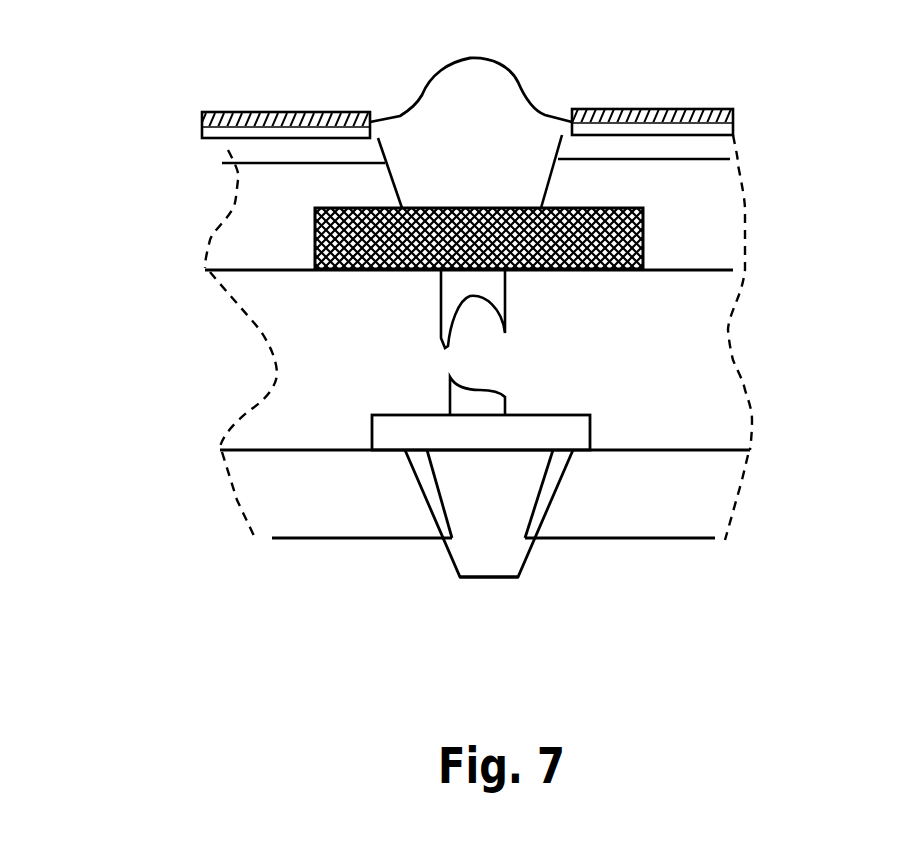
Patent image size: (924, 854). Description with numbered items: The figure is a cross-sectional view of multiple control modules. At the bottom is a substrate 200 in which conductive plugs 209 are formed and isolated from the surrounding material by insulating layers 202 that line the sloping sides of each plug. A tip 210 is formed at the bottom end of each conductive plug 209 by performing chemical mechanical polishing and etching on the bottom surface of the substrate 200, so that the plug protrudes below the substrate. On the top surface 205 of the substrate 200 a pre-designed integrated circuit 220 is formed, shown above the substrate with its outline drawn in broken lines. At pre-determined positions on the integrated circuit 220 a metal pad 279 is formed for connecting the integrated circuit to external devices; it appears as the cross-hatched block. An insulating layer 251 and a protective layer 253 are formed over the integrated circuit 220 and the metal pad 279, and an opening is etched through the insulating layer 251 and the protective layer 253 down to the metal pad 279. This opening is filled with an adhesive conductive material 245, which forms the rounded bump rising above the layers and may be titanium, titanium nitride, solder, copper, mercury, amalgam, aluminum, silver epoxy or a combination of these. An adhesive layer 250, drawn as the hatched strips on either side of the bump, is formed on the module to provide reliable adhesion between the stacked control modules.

The substrate 200 is at (645, 502).
The insulating layers 202 is at (421, 483).
The top surface 205 is at (645, 448).
The conductive plugs 209 is at (505, 493).
The tips 210 is at (492, 570).
The integrated circuit 220 is at (315, 378).
The adhesive conductive material 245 is at (485, 106).
The adhesive layer 250 is at (217, 113).
The insulating layer 251 is at (608, 190).
The protective layer 253 is at (237, 145).
The metal pads 279 is at (593, 243).